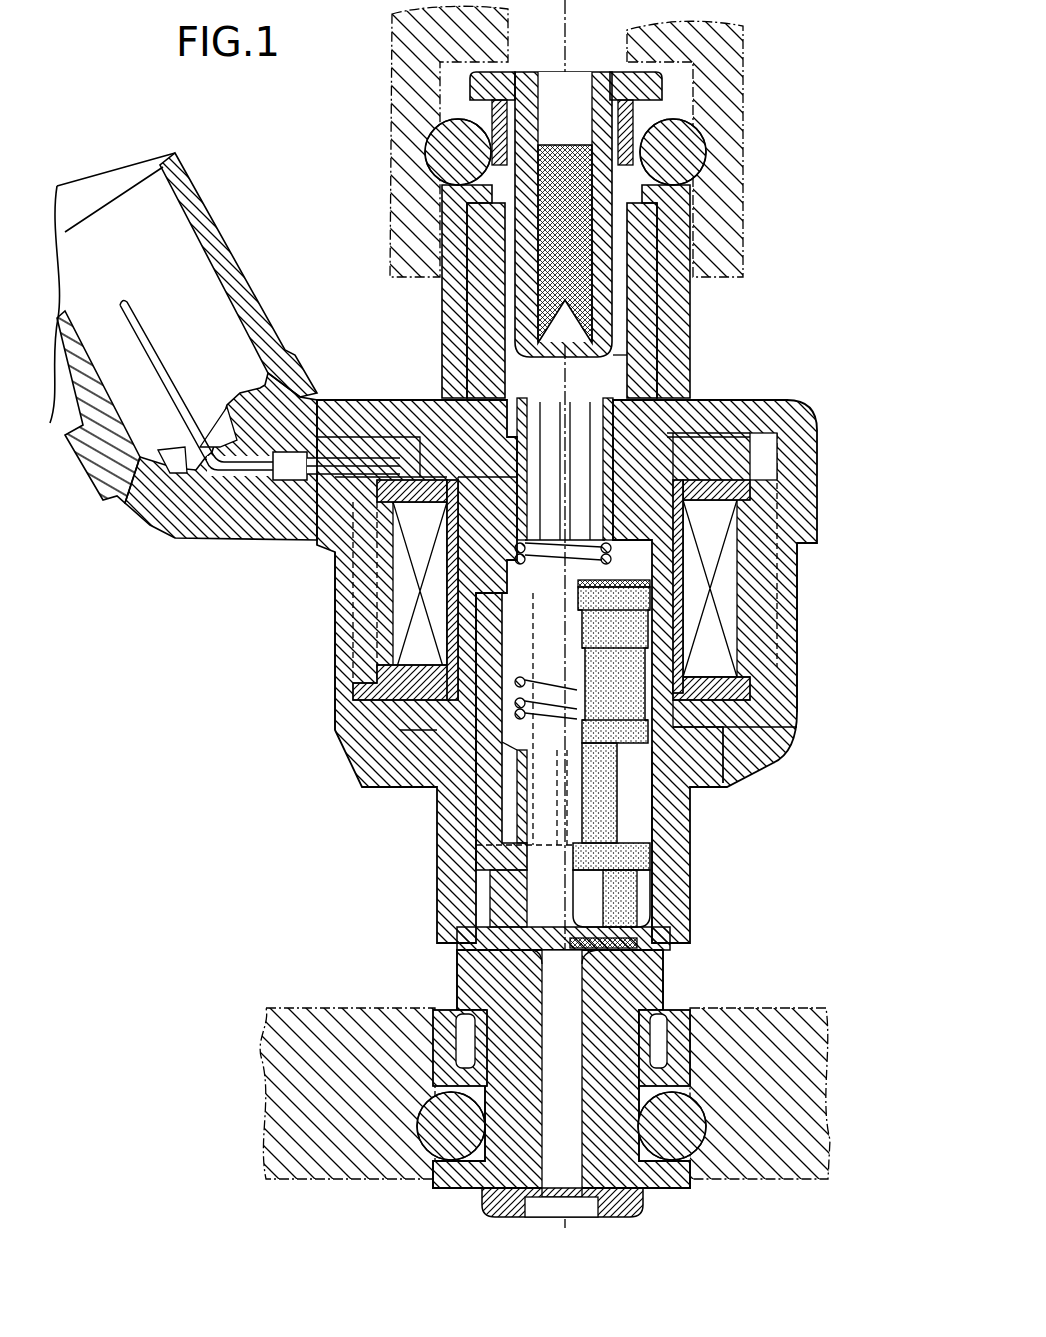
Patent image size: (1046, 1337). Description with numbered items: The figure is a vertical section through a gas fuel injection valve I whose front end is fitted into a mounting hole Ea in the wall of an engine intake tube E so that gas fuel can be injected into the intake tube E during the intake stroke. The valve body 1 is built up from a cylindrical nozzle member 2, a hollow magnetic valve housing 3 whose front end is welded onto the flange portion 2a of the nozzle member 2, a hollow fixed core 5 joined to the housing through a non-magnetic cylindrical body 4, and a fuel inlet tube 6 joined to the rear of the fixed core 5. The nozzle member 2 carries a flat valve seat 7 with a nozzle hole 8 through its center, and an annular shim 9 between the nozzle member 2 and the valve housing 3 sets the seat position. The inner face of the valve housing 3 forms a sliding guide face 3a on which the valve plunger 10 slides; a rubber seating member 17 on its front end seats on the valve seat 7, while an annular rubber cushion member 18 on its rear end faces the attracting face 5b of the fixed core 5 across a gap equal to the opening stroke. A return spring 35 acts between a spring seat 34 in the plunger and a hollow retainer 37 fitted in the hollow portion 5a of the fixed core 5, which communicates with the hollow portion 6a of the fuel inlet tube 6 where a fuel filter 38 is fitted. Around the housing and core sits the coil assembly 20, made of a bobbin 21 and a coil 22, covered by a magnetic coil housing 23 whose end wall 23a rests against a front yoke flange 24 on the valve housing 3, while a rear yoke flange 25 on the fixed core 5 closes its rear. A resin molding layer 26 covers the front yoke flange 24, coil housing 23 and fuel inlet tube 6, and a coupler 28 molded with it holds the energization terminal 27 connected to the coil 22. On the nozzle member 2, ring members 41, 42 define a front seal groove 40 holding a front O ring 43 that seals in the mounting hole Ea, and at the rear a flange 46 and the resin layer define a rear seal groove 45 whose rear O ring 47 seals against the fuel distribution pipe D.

The valve body 1 is at (452, 614).
The nozzle member 2 is at (623, 1050).
The flange portion 2a is at (661, 987).
The valve housing 3 is at (684, 857).
The sliding guide face 3a is at (655, 808).
The non-magnetic cylindrical body 4 is at (650, 592).
The fixed core 5 is at (647, 512).
The hollow portion 5a is at (600, 480).
The attracting face 5b is at (460, 548).
The fuel inlet tube 6 is at (645, 286).
The hollow portion 6a is at (622, 358).
The valve seat 7 is at (482, 934).
The nozzle hole 8 is at (554, 1054).
The annular shim 9 is at (659, 936).
The valve plunger 10 is at (517, 790).
The rubber seating member 17 is at (563, 960).
The cushion member 18 is at (593, 580).
The coil assembly 20 is at (490, 590).
The bobbin 21 is at (450, 605).
The coil 22 is at (415, 647).
The coil housing 23 is at (770, 620).
The end wall 23a is at (740, 723).
The front yoke flange 24 is at (717, 767).
The rear yoke flange 25 is at (737, 455).
The resin molding layer 26 is at (347, 568).
The energization terminal 27 is at (140, 342).
The coupler 28 is at (245, 283).
The spring seat 34 is at (524, 718).
The return spring 35 is at (521, 680).
The retainer 37 is at (518, 402).
The fuel filter 38 is at (607, 230).
The front seal groove 40 is at (489, 1124).
The front ring member 41 is at (446, 1032).
The rear ring member 42 is at (482, 1197).
The front O ring 43 is at (446, 1128).
The rear seal groove 45 is at (632, 112).
The flange 46 is at (470, 97).
The rear O ring 47 is at (452, 153).
The fuel distribution pipe D is at (735, 95).
The intake tube E is at (784, 1008).
The mounting hole Ea is at (435, 1066).
The gas fuel injection valve I is at (333, 207).